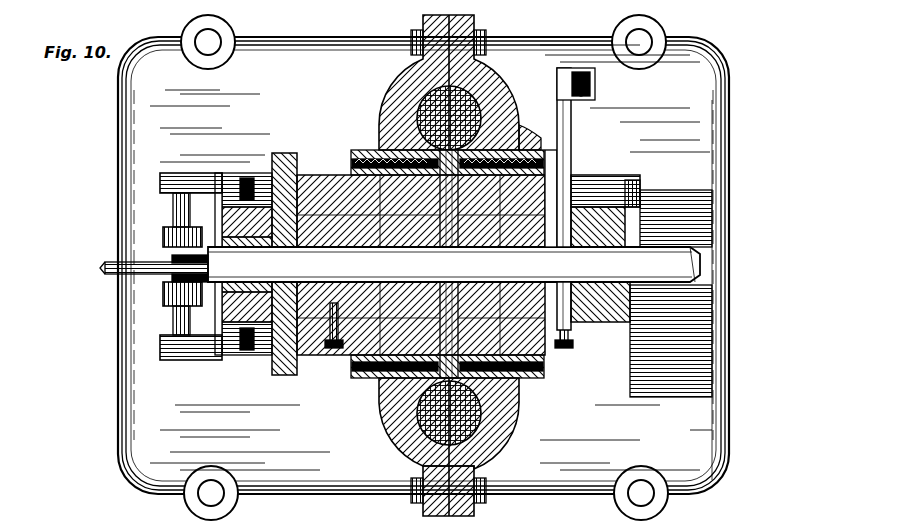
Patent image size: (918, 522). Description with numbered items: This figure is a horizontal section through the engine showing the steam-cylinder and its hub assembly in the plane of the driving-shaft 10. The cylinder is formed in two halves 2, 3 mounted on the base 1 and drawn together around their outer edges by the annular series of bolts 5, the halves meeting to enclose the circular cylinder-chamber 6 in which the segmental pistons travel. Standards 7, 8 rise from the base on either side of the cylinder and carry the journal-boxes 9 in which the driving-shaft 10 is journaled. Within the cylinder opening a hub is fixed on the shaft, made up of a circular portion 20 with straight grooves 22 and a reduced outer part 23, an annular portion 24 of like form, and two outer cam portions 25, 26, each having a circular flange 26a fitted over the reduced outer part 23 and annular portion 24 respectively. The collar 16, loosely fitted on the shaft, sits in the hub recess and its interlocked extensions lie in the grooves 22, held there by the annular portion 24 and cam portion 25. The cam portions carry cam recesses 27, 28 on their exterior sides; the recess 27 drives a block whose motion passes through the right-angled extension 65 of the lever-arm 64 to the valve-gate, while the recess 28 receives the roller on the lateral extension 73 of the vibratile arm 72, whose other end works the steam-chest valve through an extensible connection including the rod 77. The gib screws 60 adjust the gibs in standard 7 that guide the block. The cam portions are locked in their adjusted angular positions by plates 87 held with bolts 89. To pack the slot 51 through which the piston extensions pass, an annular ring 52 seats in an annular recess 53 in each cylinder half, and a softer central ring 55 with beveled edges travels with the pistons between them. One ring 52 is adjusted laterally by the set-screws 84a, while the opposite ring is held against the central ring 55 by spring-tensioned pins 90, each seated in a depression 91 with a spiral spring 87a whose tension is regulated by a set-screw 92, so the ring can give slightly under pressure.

The base 1 is at (693, 450).
The cylinder half 2 is at (495, 95).
The cylinder half 3 is at (425, 140).
The annular series of bolts 5 is at (412, 40).
The circular cylinder-chamber 6 is at (440, 118).
The standard 7 is at (220, 200).
The standard 8 is at (625, 232).
The journal-boxes 9 is at (200, 340).
The driving-shaft 10 is at (160, 280).
The collar 16 is at (400, 250).
The circular portion 20 is at (385, 340).
The straight recesses or grooves 22 is at (712, 160).
The reduced outer part 23 is at (288, 175).
The annular portion 24 is at (505, 170).
The cam portion 25 is at (282, 160).
The cam portion 26 is at (572, 165).
The circular flange 26a is at (340, 150).
The cam recess 27 is at (260, 204).
The cam recess 28 is at (620, 190).
The slot 51 is at (460, 100).
The annular ring 52 is at (415, 365).
The annular recess 53 is at (423, 488).
The central ring 55 is at (488, 118).
The gib screws or bolts 60 is at (246, 178).
The lever-arm 64 is at (110, 268).
The right-angled extension 65 is at (175, 278).
The vibratile arm 72 is at (650, 108).
The lateral extension 73 is at (600, 180).
The rod 77 is at (595, 85).
The set-screws 84a is at (680, 135).
The plates 87 is at (340, 348).
The spiral spring 87a is at (370, 162).
The set-screws or bolts 89 is at (290, 345).
The spring-tensioned pins 90 is at (345, 145).
The depression 91 is at (410, 160).
The set-screw 92 is at (320, 160).